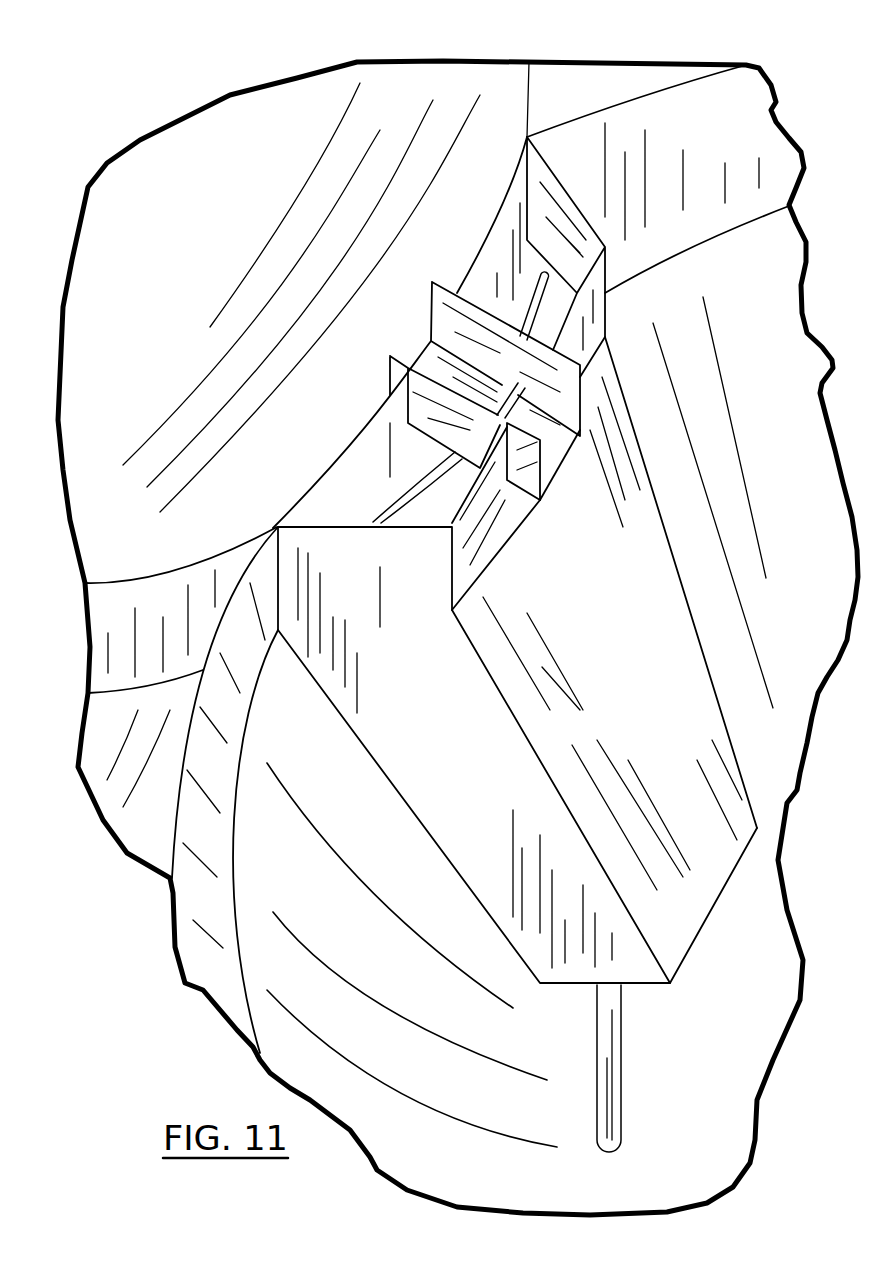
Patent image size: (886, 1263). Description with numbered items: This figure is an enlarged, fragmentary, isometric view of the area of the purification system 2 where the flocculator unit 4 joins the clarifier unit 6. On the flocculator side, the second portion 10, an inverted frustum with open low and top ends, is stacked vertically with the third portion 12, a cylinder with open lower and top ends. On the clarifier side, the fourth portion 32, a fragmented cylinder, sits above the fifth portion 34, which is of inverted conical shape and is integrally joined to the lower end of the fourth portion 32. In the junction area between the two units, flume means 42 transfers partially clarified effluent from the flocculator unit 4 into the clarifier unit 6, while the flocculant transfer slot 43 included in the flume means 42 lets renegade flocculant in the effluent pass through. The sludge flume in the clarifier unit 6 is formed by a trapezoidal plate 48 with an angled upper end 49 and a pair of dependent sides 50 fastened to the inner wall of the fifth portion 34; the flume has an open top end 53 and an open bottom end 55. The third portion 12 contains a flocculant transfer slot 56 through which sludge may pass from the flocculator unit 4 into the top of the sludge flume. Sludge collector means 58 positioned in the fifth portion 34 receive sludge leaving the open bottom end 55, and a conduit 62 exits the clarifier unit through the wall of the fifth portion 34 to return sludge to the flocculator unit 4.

The purification system 2 is at (167, 893).
The flocculator unit 4 is at (467, 82).
The clarifier unit 6 is at (634, 110).
The second portion 10 is at (190, 218).
The third portion 12 is at (148, 587).
The fourth portion 32 is at (715, 140).
The fifth portion 34 is at (795, 425).
The flume means 42 is at (432, 305).
The flocculant transfer slot 43 is at (550, 440).
The trapezoidal plate 48 is at (645, 670).
The angled upper end 49 is at (483, 532).
The dependent sides 50 is at (470, 740).
The open top end 53 is at (590, 282).
The open bottom end 55 is at (695, 944).
The flocculant transfer slot 56 is at (423, 482).
The sludge collector means 58 is at (614, 1000).
The conduit 62 is at (620, 1068).